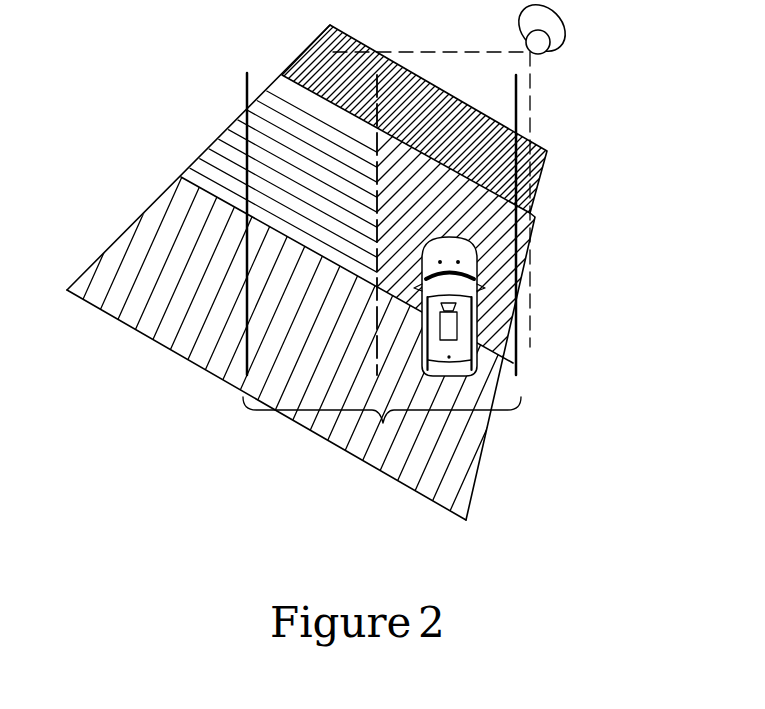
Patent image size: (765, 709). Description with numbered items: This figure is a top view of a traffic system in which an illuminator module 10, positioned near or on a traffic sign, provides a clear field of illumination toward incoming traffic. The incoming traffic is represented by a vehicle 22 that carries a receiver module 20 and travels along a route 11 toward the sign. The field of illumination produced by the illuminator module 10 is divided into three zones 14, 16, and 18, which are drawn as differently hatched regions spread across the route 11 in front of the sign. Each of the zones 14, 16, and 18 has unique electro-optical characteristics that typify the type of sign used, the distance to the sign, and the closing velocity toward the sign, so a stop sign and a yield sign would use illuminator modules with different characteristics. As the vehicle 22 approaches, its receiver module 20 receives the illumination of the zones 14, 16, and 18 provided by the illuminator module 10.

The illuminator module 10 is at (560, 66).
The route 11 is at (382, 426).
The FOI zone 14 is at (505, 160).
The FOI zone 16 is at (258, 138).
The FOI zone 18 is at (270, 318).
The receiver module 20 is at (472, 323).
The vehicle 22 is at (474, 390).